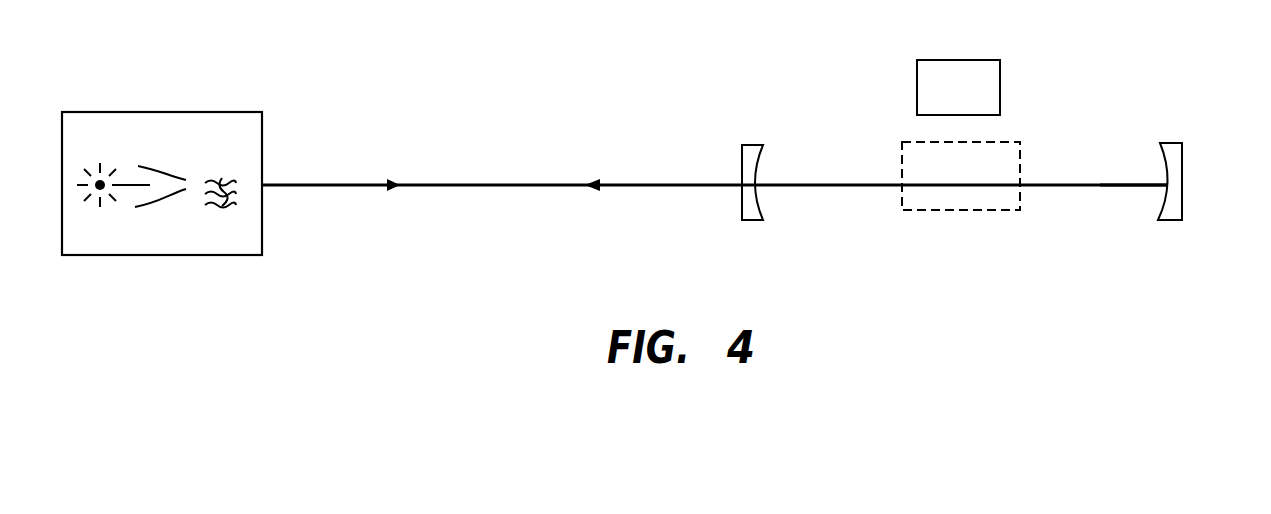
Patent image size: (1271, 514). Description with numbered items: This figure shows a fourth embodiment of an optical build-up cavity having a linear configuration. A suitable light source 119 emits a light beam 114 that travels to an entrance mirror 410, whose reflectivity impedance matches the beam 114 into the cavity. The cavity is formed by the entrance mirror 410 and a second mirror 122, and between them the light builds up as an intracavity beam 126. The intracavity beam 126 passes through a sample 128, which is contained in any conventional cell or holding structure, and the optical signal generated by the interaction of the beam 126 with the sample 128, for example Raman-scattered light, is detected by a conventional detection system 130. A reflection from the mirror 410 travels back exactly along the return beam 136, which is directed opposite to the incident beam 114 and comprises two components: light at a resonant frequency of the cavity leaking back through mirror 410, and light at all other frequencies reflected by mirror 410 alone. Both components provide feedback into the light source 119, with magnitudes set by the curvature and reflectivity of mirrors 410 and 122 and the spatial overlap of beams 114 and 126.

The light source 119 is at (185, 110).
The light beam 114 is at (363, 185).
The return beam 136 is at (610, 185).
The entrance mirror 410 is at (747, 222).
The detection system 130 is at (993, 60).
The sample 128 is at (967, 210).
The intracavity beam 126 is at (1120, 183).
The mirror 122 is at (1182, 162).